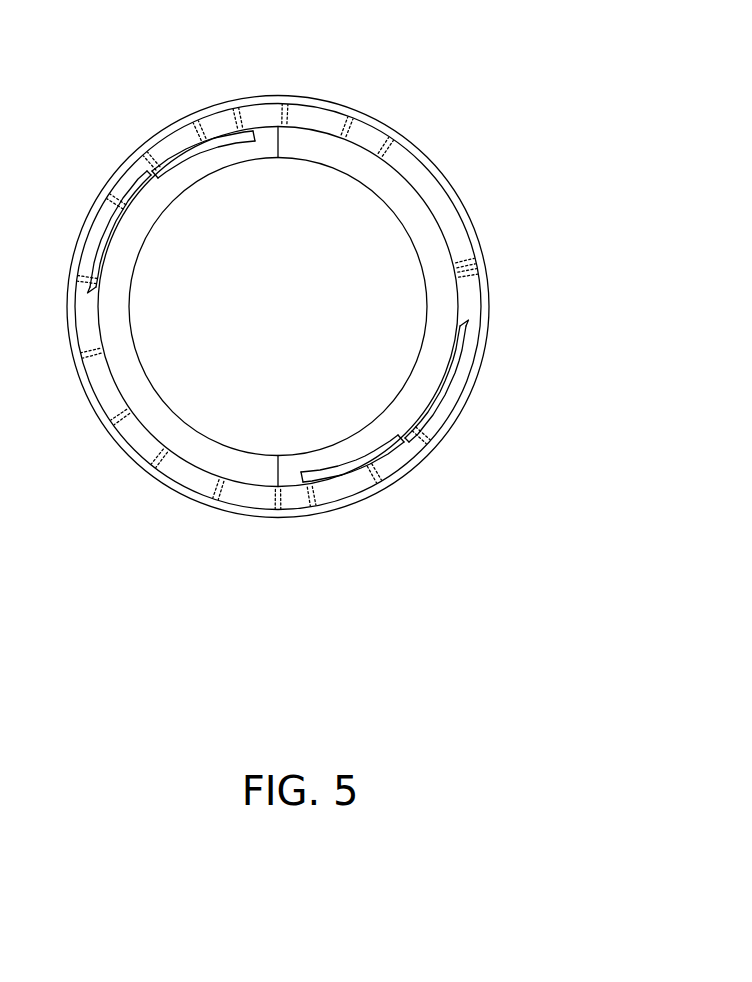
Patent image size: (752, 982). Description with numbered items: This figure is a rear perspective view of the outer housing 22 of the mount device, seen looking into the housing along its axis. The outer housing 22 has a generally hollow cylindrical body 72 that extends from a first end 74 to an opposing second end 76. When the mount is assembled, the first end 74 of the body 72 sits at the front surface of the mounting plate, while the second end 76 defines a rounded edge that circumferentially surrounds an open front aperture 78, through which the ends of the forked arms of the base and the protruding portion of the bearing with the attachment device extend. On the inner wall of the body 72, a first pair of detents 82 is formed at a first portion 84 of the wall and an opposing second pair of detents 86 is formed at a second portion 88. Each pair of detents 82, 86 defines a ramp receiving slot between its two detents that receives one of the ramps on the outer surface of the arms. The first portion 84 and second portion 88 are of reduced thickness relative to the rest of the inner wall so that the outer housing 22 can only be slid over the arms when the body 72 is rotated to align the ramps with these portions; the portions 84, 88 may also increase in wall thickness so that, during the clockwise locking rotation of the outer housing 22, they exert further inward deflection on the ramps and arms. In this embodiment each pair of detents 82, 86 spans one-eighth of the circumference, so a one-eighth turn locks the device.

The outer housing 22 is at (197, 500).
The body 72 is at (489, 292).
The first end 74 is at (422, 152).
The second end 76 is at (358, 177).
The front aperture 78 is at (383, 247).
The first pair of detents 82 is at (405, 452).
The first portion 84 is at (342, 476).
The second pair of detents 86 is at (193, 143).
The second portion 88 is at (140, 190).